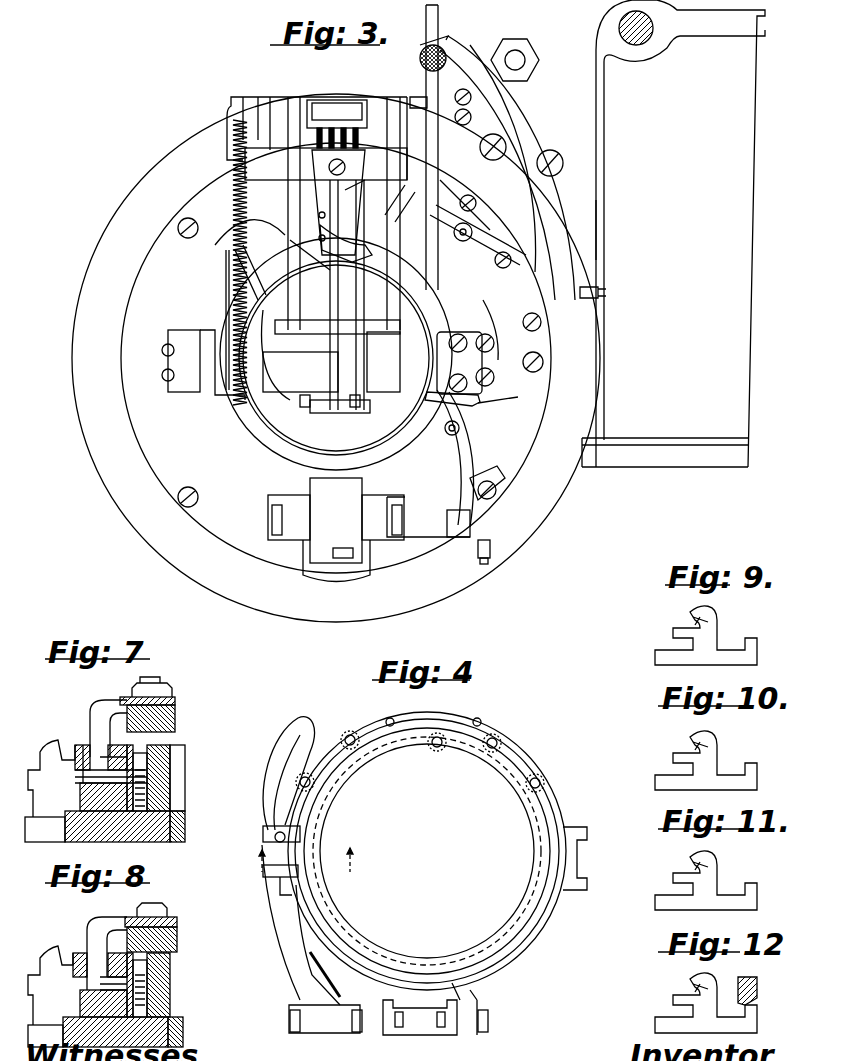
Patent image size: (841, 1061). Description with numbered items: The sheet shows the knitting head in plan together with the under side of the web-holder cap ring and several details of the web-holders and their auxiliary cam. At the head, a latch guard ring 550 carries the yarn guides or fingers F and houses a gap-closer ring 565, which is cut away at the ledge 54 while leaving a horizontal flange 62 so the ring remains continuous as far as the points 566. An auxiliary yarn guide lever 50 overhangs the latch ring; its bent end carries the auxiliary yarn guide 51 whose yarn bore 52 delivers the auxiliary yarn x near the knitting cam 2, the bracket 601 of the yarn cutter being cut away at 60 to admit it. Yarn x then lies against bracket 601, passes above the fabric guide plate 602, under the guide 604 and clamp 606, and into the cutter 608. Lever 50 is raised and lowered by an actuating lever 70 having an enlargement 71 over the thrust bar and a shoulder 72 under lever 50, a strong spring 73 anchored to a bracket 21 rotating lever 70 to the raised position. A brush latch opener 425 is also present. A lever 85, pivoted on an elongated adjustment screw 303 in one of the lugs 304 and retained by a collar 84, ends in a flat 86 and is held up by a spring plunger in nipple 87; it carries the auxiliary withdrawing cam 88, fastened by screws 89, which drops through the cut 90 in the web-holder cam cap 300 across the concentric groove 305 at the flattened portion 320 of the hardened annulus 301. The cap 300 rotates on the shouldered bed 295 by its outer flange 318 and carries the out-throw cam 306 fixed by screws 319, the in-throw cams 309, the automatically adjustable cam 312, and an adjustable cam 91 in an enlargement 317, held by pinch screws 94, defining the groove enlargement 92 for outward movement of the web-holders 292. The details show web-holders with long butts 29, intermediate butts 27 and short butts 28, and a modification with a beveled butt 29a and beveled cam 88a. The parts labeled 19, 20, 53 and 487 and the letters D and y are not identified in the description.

In FIG. 3, the knitting cam 2 is at (592, 300).
In FIG. 3, the side plate 19 is at (556, 228).
In FIG. 3, the curved arm 20 is at (505, 105).
In FIG. 3, the bracket 21 is at (470, 44).
In FIG. 10, the intermediate butts 27 is at (757, 768).
In FIG. 11, the short butts 28 is at (757, 888).
In FIG. 9, the long butts 29 is at (757, 643).
In FIG. 12, the beveled butt 29a is at (757, 1010).
In FIG. 3, the auxiliary yarn guide lever 50 is at (380, 218).
In FIG. 3, the auxiliary yarn guide 51 is at (429, 403).
In FIG. 3, the yarn bore 52 is at (502, 406).
In FIG. 3, the screw 53 is at (452, 186).
In FIG. 3, the cut-away 54 is at (440, 425).
In FIG. 3, the cut-away of bracket 60 is at (489, 353).
In FIG. 3, the horizontal flange 62 is at (445, 455).
In FIG. 3, the actuating lever 70 is at (408, 97).
In FIG. 3, the enlargement 71 is at (426, 30).
In FIG. 3, the shoulder 72 is at (512, 230).
In FIG. 3, the spring 73 is at (441, 46).
In FIG. 3, the collar 84 is at (480, 548).
In FIG. 4, the collar 84 is at (384, 1035).
In FIG. 3, the lever 85 is at (420, 540).
In FIG. 7, the lever 85 is at (178, 705).
In FIG. 8, the lever 85 is at (178, 935).
In FIG. 4, the lever 85 is at (283, 945).
In FIG. 4, the flat 86 is at (312, 725).
In FIG. 3, the nipple 87 is at (505, 480).
In FIG. 7, the auxiliary withdrawing cam 88 is at (100, 712).
In FIG. 8, the auxiliary withdrawing cam 88 is at (195, 898).
In FIG. 4, the auxiliary withdrawing cam 88 is at (315, 848).
In FIG. 12, the beveled cam 88a is at (755, 975).
In FIG. 3, the screws 89 is at (482, 375).
In FIG. 7, the screws 89 is at (140, 680).
In FIG. 7, the cut 90 is at (90, 732).
In FIG. 4, the cut 90 is at (305, 835).
In FIG. 7, the adjustable cam 91 is at (172, 770).
In FIG. 8, the adjustable cam 91 is at (172, 968).
In FIG. 4, the adjustable cam 91 is at (283, 890).
In FIG. 4, the enlargement of groove 92 is at (275, 880).
In FIG. 7, the pinch screws 94 is at (175, 735).
In FIG. 4, the pinch screws 94 is at (262, 866).
In FIG. 7, the web-holders 292 is at (55, 740).
In FIG. 9, the web-holders 292 is at (712, 615).
In FIG. 10, the web-holders 292 is at (712, 740).
In FIG. 11, the web-holders 292 is at (712, 860).
In FIG. 12, the web-holders 292 is at (690, 993).
In FIG. 7, the web-holder bed 295 is at (105, 832).
In FIG. 8, the web-holder bed 295 is at (105, 996).
In FIG. 3, the web-holder cam cap 300 is at (220, 397).
In FIG. 7, the web-holder cam cap 300 is at (172, 748).
In FIG. 8, the web-holder cam cap 300 is at (175, 995).
In FIG. 7, the shouldered annulus 301 is at (77, 778).
In FIG. 8, the shouldered annulus 301 is at (78, 950).
In FIG. 4, the shouldered annulus 301 is at (500, 935).
In FIG. 3, the adjustment screws 303 is at (340, 585).
In FIG. 4, the adjustment screws 303 is at (288, 1010).
In FIG. 4, the lugs 304 is at (460, 1030).
In FIG. 4, the concentric groove 305 is at (355, 945).
In FIG. 4, the out-throw cam 306 is at (437, 748).
In FIG. 4, the in-throw cams 309 is at (342, 768).
In FIG. 4, the automatically adjustable cam 312 is at (485, 728).
In FIG. 4, the enlargements 317 is at (265, 830).
In FIG. 7, the outer flange 318 is at (178, 790).
In FIG. 4, the outer flange 318 is at (560, 915).
In FIG. 4, the screws 319 is at (350, 765).
In FIG. 4, the flattened portion 320 is at (320, 895).
In FIG. 3, the brush latch opener 425 is at (228, 268).
In FIG. 3, the arc arm 487 is at (528, 128).
In FIG. 3, the latch guard ring 550 is at (345, 97).
In FIG. 3, the gap-closer ring 565 is at (336, 358).
In FIG. 3, the terminal points 566 is at (332, 280).
In FIG. 3, the bracket 601 is at (545, 378).
In FIG. 3, the fabric guide plate 602 is at (333, 355).
In FIG. 3, the guide 604 is at (262, 315).
In FIG. 3, the clamp 606 is at (272, 340).
In FIG. 3, the cutter 608 is at (334, 430).
In FIG. 3, the door D is at (600, 350).
In FIG. 3, the yarn guides F is at (342, 206).
In FIG. 3, the auxiliary yarn x is at (300, 403).
In FIG. 3, the axis y is at (235, 212).